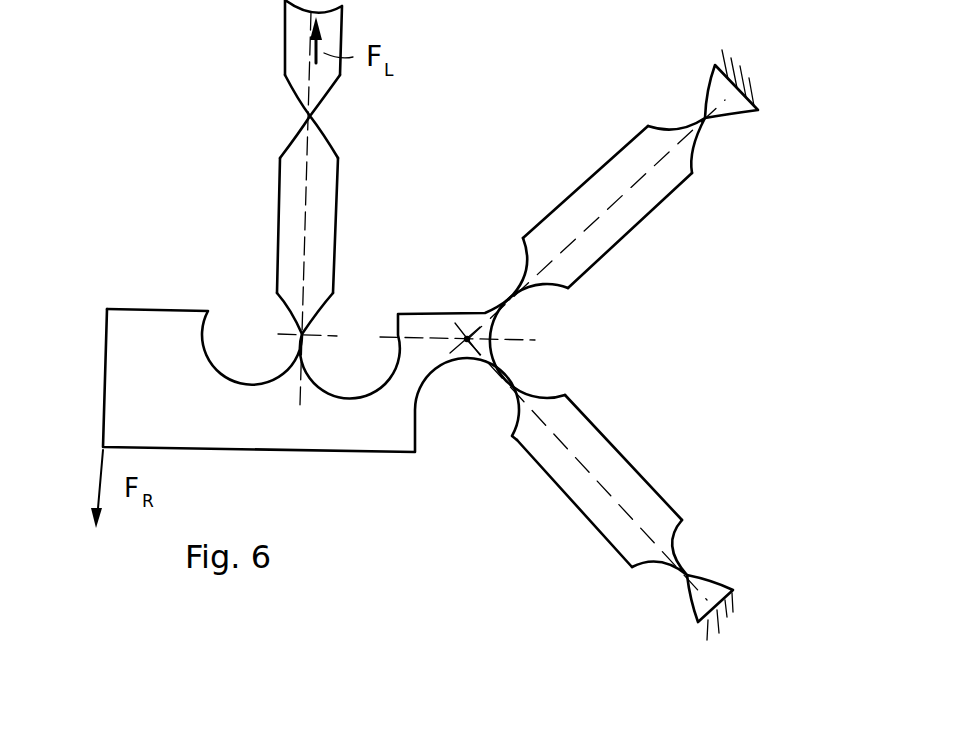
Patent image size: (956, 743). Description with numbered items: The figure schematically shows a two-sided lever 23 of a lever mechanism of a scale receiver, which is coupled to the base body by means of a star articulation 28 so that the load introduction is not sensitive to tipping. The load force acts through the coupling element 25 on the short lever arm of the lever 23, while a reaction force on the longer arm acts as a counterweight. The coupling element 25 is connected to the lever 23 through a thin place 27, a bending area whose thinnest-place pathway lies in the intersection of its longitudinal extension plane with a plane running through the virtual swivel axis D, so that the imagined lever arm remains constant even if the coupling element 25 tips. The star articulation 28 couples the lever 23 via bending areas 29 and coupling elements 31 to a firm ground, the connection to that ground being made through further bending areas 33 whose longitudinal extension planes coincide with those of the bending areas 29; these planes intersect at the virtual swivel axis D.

The lever 23 is at (340, 438).
The coupling element 25 is at (323, 227).
The thin place 27 is at (312, 115).
The star articulation 28 is at (473, 248).
The bending areas 29 is at (513, 303).
The coupling elements 31 is at (623, 228).
The bending areas 33 is at (706, 120).
The virtual swivel axis D is at (468, 345).